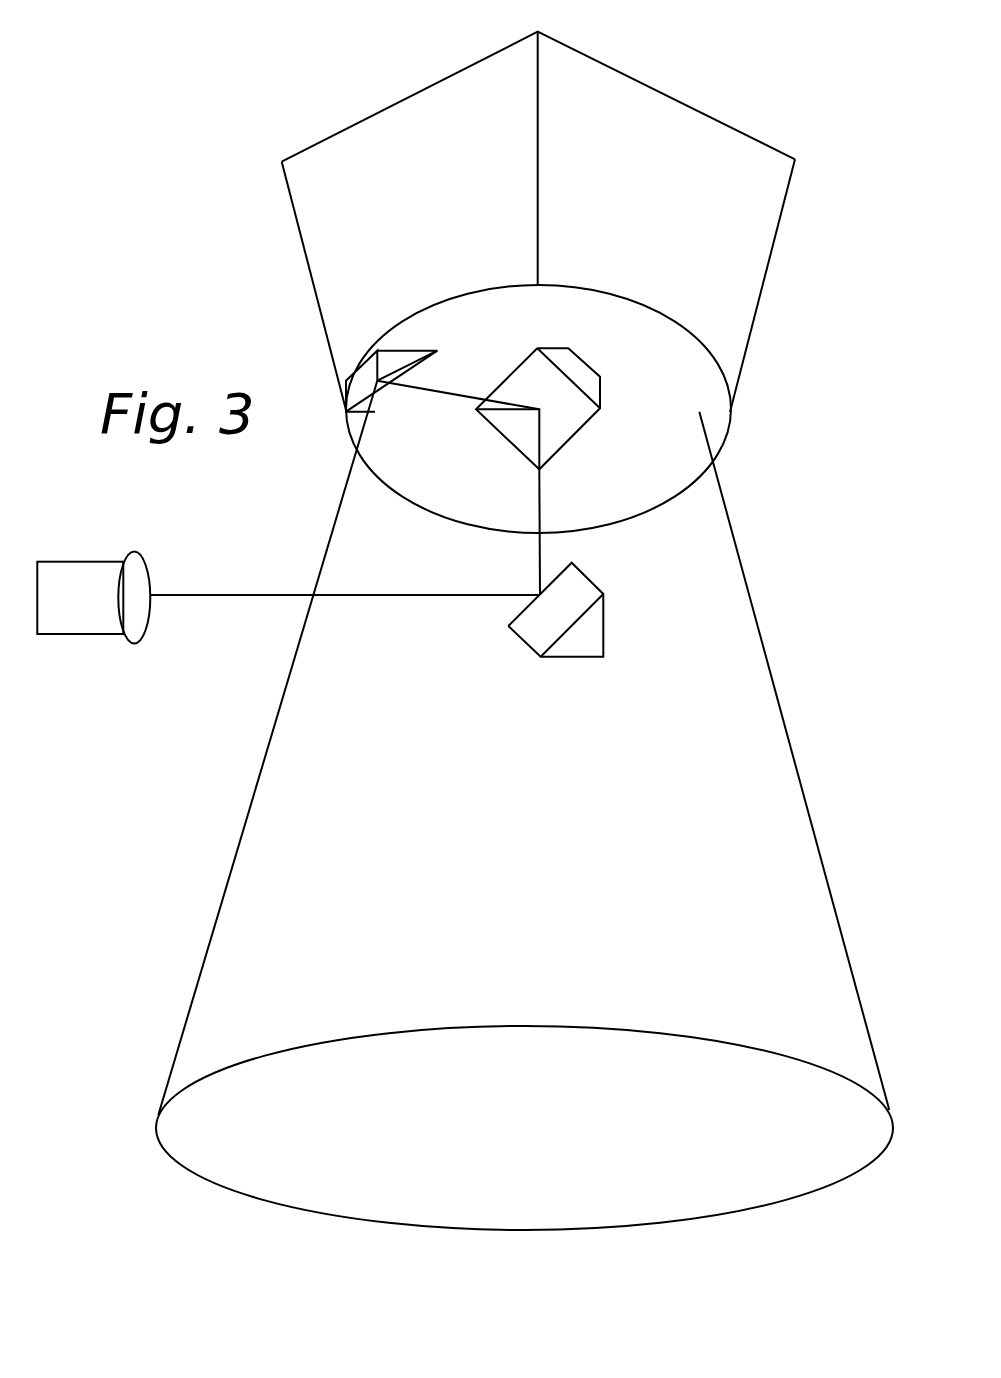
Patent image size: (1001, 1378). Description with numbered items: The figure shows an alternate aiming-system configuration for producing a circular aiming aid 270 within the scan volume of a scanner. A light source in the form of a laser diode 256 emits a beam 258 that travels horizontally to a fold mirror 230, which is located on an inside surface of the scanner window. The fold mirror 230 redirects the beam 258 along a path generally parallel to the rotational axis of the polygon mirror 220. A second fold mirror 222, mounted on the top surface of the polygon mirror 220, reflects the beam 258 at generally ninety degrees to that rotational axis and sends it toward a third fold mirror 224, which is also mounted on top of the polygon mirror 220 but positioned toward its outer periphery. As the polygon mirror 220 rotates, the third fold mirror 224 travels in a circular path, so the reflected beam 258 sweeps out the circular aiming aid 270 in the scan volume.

The polygon mirror 220 is at (762, 293).
The second fold mirror 222 is at (580, 427).
The third fold mirror 224 is at (402, 358).
The fold mirror 230 is at (587, 640).
The laser diode 256 is at (80, 562).
The beam 258 is at (207, 595).
The circular aiming aid 270 is at (600, 1024).